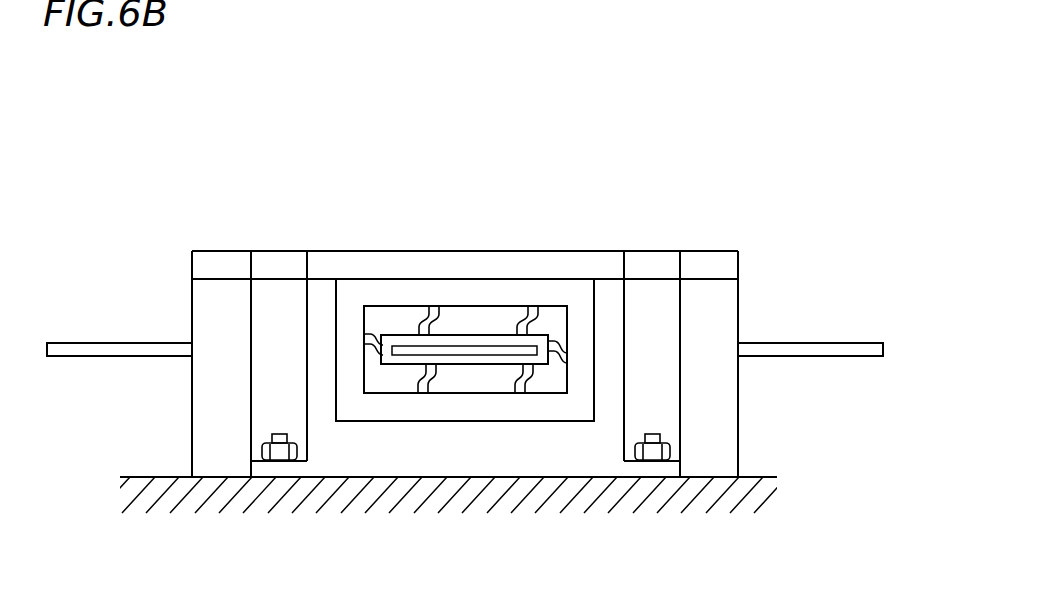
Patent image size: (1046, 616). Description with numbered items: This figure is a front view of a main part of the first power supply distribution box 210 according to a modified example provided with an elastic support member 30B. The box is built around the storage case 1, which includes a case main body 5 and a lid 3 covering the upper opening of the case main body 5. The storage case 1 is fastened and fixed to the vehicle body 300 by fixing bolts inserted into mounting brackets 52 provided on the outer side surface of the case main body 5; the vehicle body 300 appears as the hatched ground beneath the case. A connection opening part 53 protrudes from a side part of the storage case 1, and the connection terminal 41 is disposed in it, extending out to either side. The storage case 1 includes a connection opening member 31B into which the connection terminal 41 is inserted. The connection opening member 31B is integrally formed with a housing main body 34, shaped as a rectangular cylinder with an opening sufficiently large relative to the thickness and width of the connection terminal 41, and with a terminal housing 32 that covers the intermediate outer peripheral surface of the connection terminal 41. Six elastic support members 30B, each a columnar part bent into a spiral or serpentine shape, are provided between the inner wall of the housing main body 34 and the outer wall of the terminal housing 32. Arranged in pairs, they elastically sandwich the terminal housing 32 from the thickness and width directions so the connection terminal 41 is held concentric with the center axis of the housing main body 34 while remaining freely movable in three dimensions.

The storage case 1 is at (257, 124).
The lid 3 is at (238, 251).
The case main body 5 is at (186, 304).
The connection opening part 53 is at (326, 323).
The connection opening member 31B is at (458, 279).
The housing main body 34 is at (388, 296).
The terminal housing 32 is at (474, 335).
The elastic support member 30B is at (420, 323).
The connection terminal 41 is at (108, 344).
The first power supply distribution box 210 is at (687, 224).
The mounting bracket 52 is at (653, 468).
The vehicle body 300 is at (155, 477).